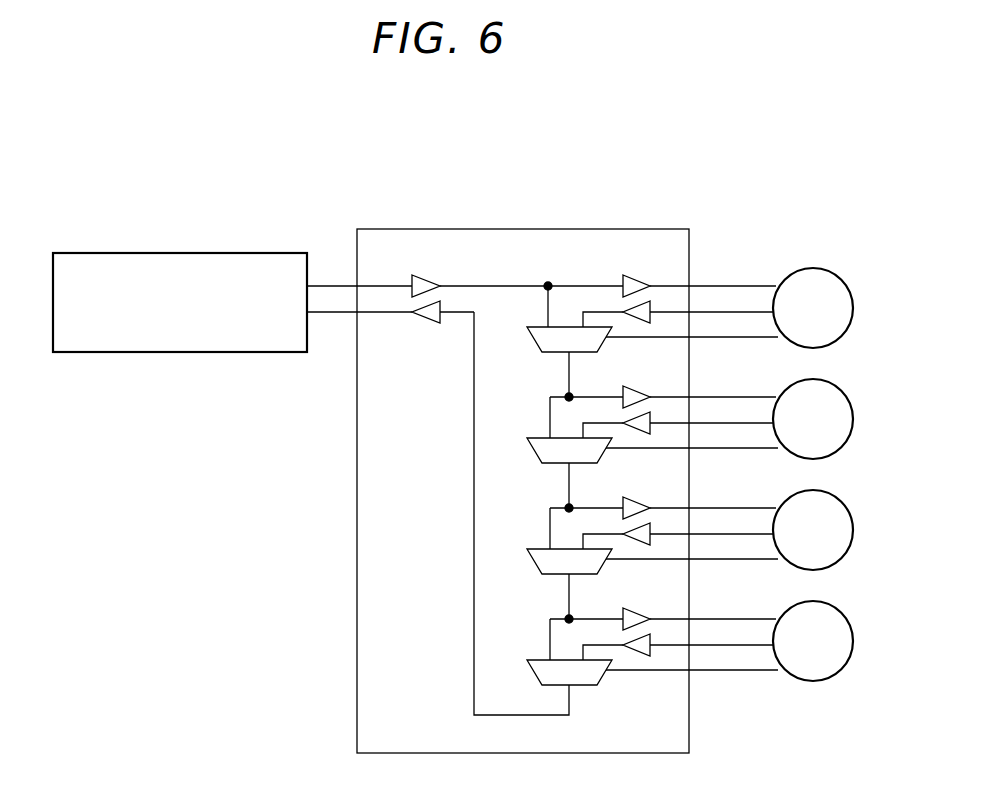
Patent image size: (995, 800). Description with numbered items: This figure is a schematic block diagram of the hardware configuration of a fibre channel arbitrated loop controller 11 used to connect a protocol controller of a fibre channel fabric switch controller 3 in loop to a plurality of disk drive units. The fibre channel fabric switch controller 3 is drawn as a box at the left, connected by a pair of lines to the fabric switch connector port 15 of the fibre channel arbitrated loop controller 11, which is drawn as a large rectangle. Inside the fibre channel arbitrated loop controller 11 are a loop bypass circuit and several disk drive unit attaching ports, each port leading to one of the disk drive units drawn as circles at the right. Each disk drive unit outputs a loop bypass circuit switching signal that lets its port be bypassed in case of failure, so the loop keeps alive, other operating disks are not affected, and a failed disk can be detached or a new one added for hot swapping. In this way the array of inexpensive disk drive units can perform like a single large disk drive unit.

The fibre channel fabric switch controller 3 is at (233, 253).
The fibre channel arbitrated loop controller 11 is at (612, 229).
The fabric switch connector port 15 is at (426, 280).